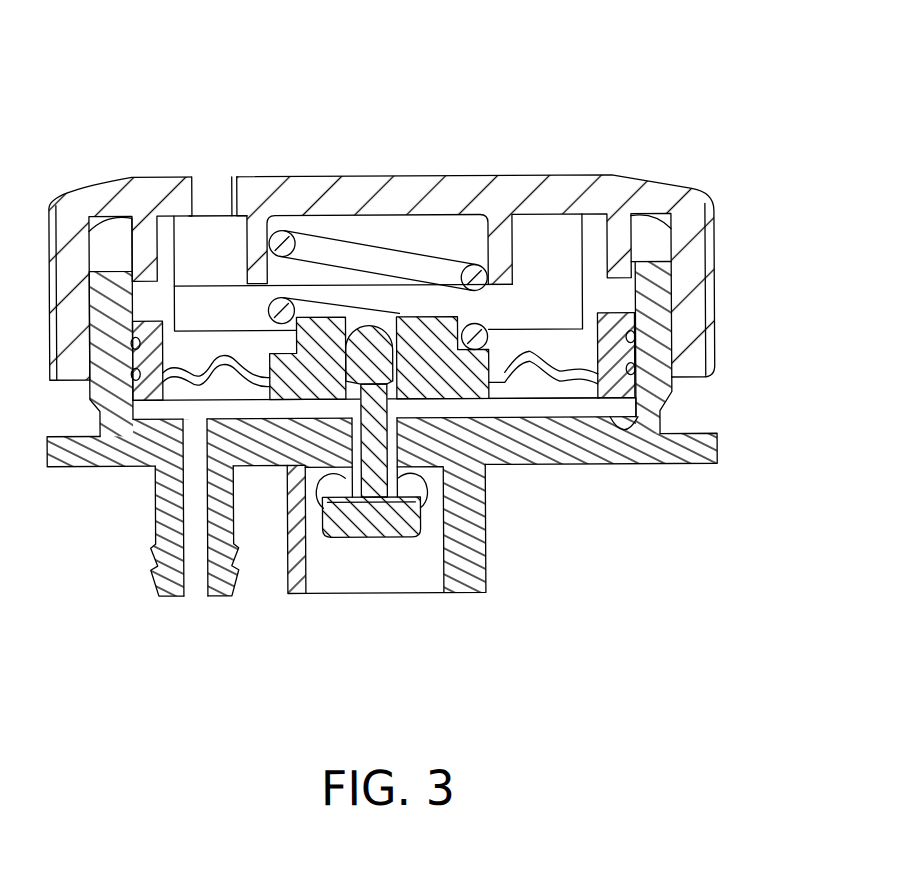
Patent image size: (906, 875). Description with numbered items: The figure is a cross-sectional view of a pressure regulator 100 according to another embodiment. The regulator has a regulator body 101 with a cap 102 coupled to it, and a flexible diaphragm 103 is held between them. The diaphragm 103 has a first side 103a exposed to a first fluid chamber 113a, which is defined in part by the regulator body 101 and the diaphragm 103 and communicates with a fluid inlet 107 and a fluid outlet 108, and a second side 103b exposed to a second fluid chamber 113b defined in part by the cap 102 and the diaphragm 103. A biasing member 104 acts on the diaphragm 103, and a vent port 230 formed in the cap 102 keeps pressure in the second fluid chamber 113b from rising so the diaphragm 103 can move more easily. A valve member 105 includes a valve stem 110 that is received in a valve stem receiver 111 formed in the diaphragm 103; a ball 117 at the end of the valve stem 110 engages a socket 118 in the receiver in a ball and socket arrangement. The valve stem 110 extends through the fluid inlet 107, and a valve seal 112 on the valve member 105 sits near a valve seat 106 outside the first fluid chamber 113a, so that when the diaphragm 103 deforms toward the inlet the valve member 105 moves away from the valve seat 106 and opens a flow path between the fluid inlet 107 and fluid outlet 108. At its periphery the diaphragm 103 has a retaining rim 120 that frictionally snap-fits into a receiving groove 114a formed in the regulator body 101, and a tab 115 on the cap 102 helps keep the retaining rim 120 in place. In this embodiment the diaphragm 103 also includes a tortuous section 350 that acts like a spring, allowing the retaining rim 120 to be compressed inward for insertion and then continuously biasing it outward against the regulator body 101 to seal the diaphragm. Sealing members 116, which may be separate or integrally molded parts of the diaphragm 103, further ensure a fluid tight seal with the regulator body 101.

The pressure regulator 100 is at (643, 103).
The regulator body 101 is at (638, 452).
The cap 102 is at (683, 190).
The diaphragm 103 is at (290, 357).
The first side 103a is at (297, 422).
The second side 103b is at (562, 352).
The biasing member 104 is at (283, 240).
The valve member 105 is at (382, 518).
The valve seat 106 is at (324, 480).
The fluid inlet 107 is at (307, 586).
The fluid outlet 108 is at (200, 588).
The valve stem 110 is at (392, 403).
The valve stem receiver 111 is at (405, 358).
The valve seal 112 is at (420, 488).
The first fluid chamber 113a is at (177, 414).
The second fluid chamber 113b is at (190, 228).
The receiving groove 114a is at (660, 434).
The tab 115 is at (672, 249).
The sealing member 116 is at (130, 387).
The ball 117 is at (358, 326).
The socket 118 is at (391, 350).
The retaining rim 120 is at (660, 382).
The vent port 230 is at (218, 187).
The tortuous section 350 is at (544, 401).